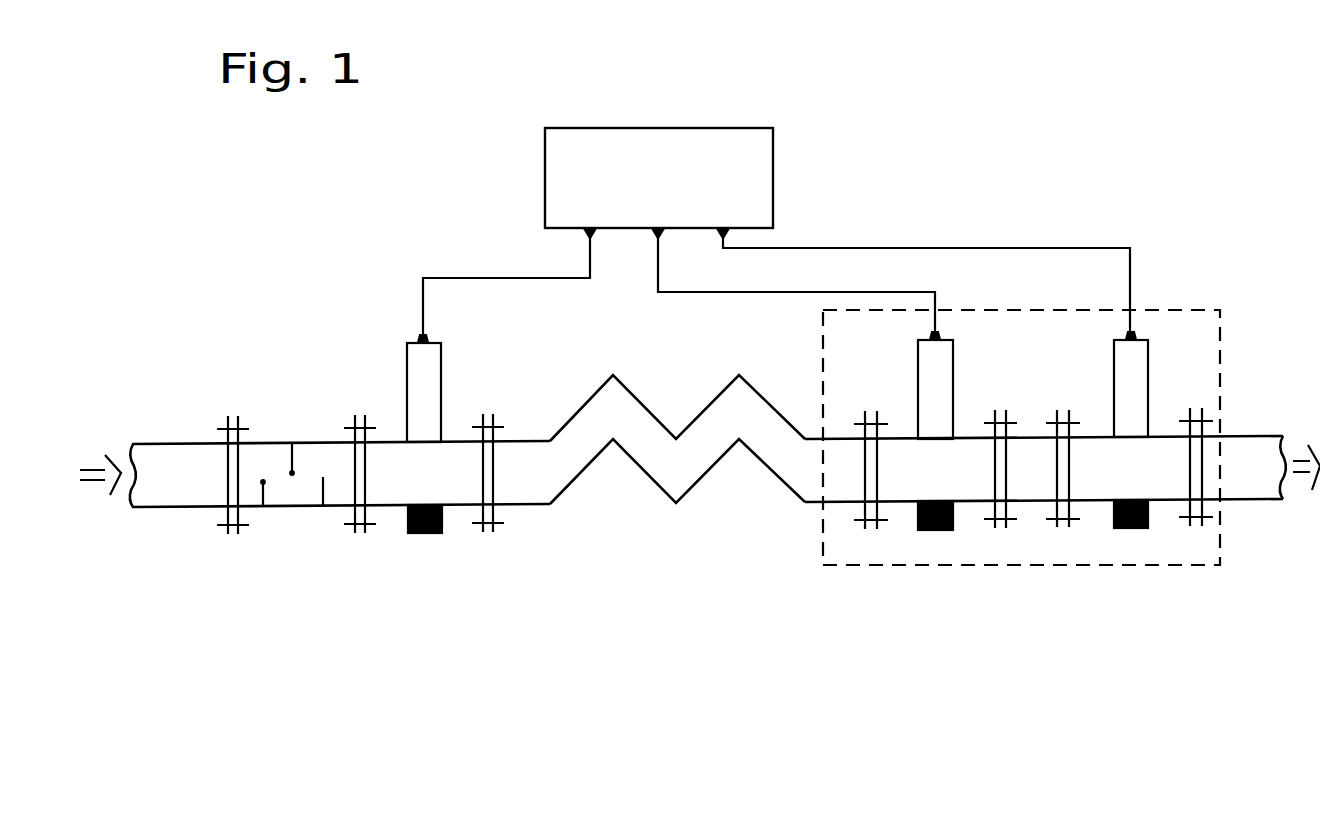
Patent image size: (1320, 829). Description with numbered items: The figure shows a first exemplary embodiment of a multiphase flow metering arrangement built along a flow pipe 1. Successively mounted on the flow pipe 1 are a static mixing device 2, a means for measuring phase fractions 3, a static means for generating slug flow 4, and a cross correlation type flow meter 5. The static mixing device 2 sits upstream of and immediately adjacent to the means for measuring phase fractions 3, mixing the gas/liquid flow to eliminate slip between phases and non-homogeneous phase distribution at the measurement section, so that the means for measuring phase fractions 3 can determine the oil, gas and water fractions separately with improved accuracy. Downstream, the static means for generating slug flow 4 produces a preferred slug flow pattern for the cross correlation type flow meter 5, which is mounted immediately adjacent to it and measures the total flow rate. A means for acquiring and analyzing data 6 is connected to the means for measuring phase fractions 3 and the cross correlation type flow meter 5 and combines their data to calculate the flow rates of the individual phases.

The flow pipe 1 is at (158, 443).
The static mixing device 2 is at (260, 443).
The means for measuring phase fractions 3 is at (448, 442).
The static means for generating slug flow 4 is at (647, 410).
The cross correlation type flow meter 5 is at (1010, 310).
The means for acquiring and analyzing data 6 is at (773, 198).